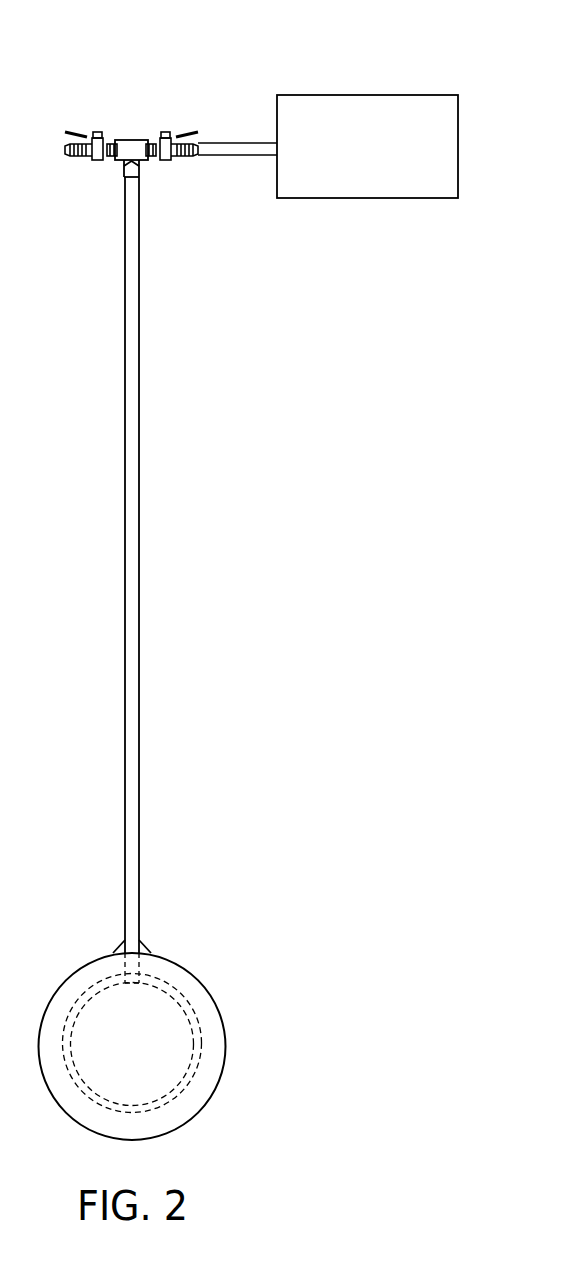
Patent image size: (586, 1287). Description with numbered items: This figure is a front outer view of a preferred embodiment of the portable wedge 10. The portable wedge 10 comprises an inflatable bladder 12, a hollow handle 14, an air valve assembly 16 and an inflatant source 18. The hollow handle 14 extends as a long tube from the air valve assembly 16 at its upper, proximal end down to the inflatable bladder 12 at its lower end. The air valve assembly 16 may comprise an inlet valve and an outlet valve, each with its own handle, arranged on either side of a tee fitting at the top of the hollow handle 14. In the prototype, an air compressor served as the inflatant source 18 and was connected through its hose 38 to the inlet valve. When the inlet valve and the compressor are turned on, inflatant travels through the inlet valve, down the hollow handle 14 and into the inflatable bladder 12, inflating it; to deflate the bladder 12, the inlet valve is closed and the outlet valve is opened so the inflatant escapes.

The portable wedge 10 is at (202, 513).
The inflatable bladder 12 is at (157, 1052).
The hollow handle 14 is at (139, 358).
The air valve assembly 16 is at (175, 140).
The inflatant source 18 is at (358, 182).
The hose 38 is at (237, 140).